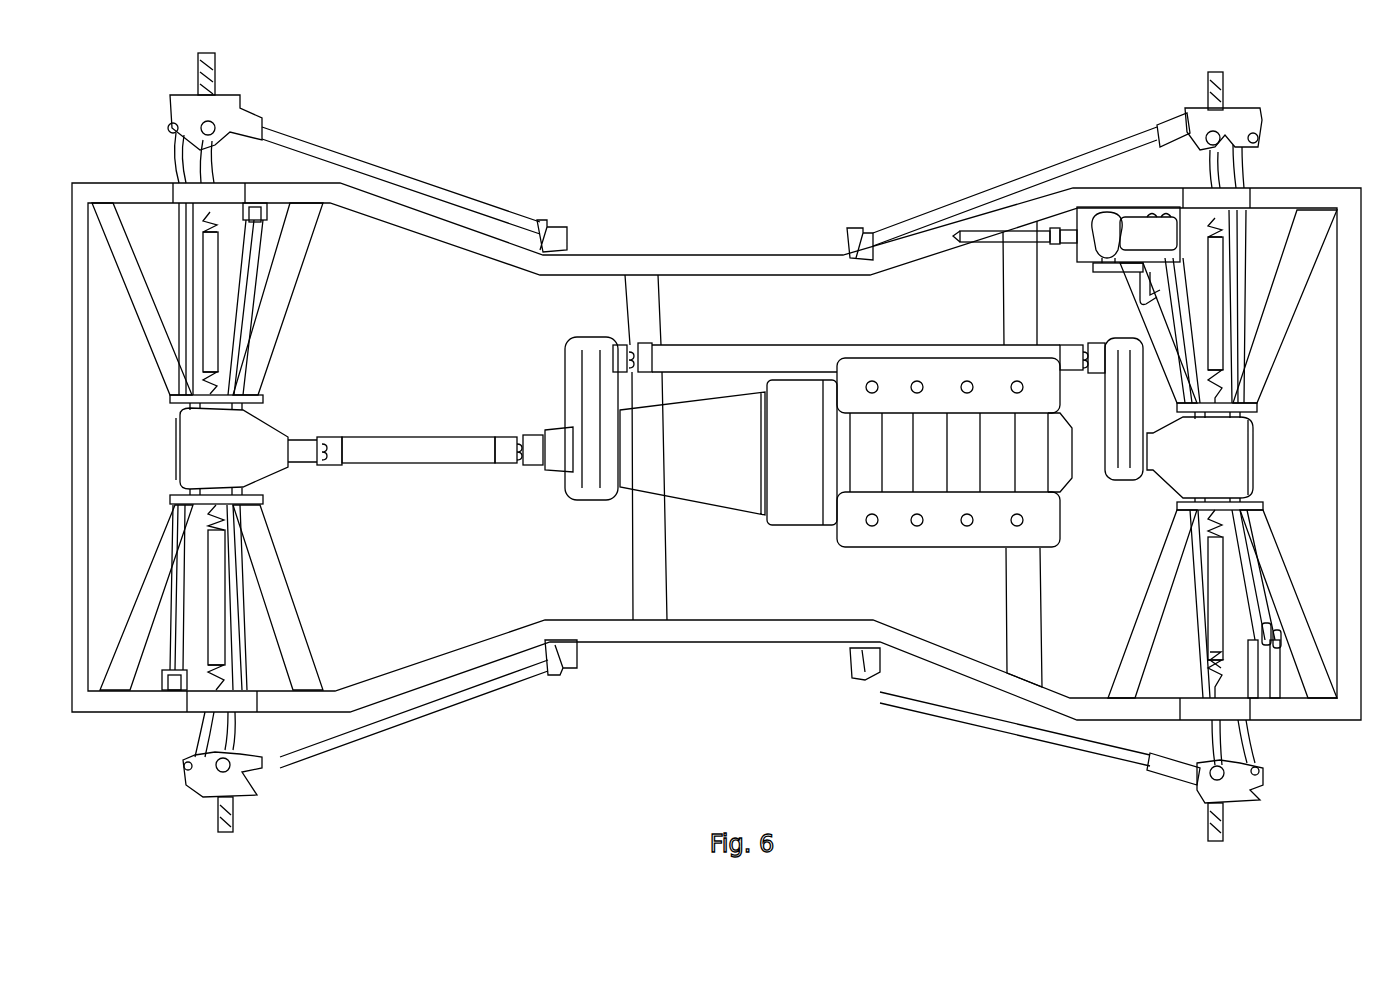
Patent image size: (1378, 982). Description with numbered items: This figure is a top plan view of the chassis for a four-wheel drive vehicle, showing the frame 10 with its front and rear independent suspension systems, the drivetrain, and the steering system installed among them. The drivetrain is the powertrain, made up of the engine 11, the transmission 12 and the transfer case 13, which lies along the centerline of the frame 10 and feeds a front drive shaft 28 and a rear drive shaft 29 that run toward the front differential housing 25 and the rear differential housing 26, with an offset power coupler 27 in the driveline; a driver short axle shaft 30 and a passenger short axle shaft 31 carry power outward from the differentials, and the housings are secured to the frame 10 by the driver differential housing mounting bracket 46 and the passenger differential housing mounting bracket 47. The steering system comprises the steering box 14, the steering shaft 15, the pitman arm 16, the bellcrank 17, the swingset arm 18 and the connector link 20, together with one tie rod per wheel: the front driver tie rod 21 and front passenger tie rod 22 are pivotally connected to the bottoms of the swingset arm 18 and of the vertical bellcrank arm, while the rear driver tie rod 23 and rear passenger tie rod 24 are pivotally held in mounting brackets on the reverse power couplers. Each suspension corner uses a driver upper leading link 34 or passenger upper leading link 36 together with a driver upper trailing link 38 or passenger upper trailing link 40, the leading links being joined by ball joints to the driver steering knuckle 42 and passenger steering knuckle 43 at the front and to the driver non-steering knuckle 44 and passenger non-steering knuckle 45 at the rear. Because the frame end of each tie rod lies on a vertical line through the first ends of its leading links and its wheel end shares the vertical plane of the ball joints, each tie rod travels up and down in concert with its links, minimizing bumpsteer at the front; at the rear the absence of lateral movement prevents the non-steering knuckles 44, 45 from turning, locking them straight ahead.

The frame 10 is at (737, 640).
The engine 11 is at (942, 538).
The transmission 12 is at (725, 490).
The transfer case 13 is at (587, 393).
The steering box 14 is at (1105, 225).
The steering shaft 15 is at (1012, 232).
The pitman arm 16 is at (1105, 277).
The bellcrank 17 is at (1157, 295).
The swingset arm 18 is at (1268, 617).
The connector link 20 is at (1237, 533).
The front driver tie rod 21 is at (1245, 252).
The front passenger tie rod 22 is at (1222, 658).
The rear driver tie rod 23 is at (185, 222).
The rear passenger tie rod 24 is at (258, 330).
The front differential housing 25 is at (1230, 442).
The rear differential housing 26 is at (197, 425).
The offset power coupler 27 is at (1118, 450).
The front drive shaft 28 is at (805, 357).
The rear drive shaft 29 is at (410, 453).
The driver short axle shaft 30 is at (210, 290).
The passenger short axle shaft 31 is at (213, 583).
The driver upper leading link 34 is at (200, 283).
The passenger upper leading link 36 is at (233, 593).
The driver upper trailing link 38 is at (432, 177).
The passenger upper trailing link 40 is at (452, 697).
The driver steering knuckle 42 is at (1207, 117).
The passenger steering knuckle 43 is at (1202, 782).
The driver non-steering knuckle 44 is at (215, 108).
The passenger non-steering knuckle 45 is at (228, 783).
The driver differential housing mounting bracket 46 is at (290, 252).
The passenger differential housing mounting bracket 47 is at (170, 535).